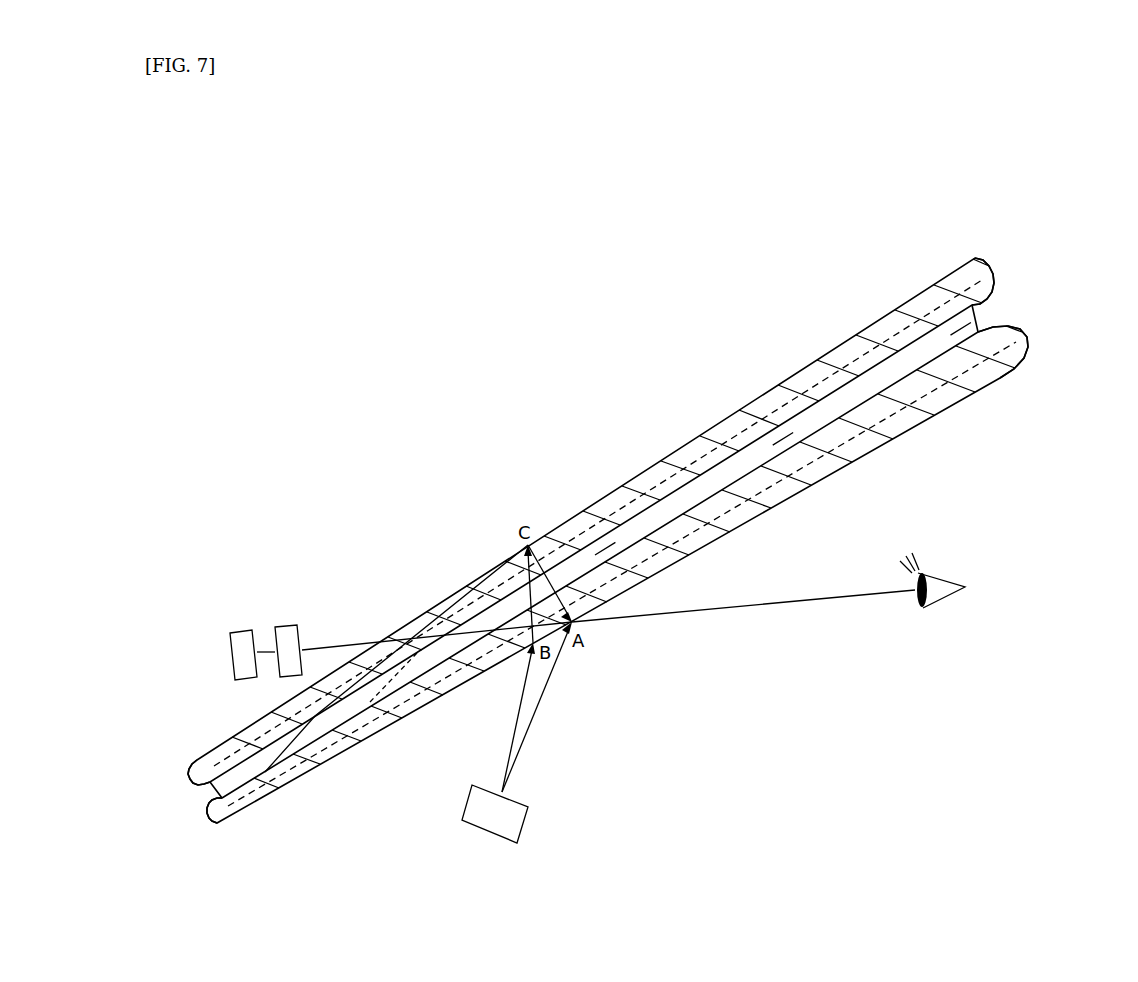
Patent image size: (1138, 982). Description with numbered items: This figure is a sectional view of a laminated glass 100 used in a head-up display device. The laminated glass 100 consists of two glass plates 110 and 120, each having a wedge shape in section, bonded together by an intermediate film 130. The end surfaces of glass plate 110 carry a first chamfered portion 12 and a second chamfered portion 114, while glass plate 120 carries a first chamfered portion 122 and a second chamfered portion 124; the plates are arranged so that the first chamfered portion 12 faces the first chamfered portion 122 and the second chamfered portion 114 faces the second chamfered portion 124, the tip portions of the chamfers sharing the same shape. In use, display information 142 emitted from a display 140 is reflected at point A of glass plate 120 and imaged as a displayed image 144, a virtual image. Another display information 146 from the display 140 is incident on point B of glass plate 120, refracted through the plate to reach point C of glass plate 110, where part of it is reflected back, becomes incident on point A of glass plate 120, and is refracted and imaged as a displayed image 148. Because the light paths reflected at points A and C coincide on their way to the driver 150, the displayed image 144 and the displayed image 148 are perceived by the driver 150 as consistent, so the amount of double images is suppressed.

The laminated glass 100 is at (494, 371).
The glass plate 110 is at (572, 513).
The first end of first light guide plate 12 is at (187, 776).
The second chamfered portion 114 is at (993, 268).
The glass plate 120 is at (697, 558).
The first chamfered portion 122 is at (207, 818).
The second chamfered portion 124 is at (1026, 333).
The intermediate film 130 is at (663, 510).
The display 140 is at (490, 830).
The display information 142 is at (538, 711).
The display information 146 is at (515, 727).
The displayed image 144 is at (290, 626).
The displayed image 148 is at (246, 631).
The driver 150 is at (938, 618).